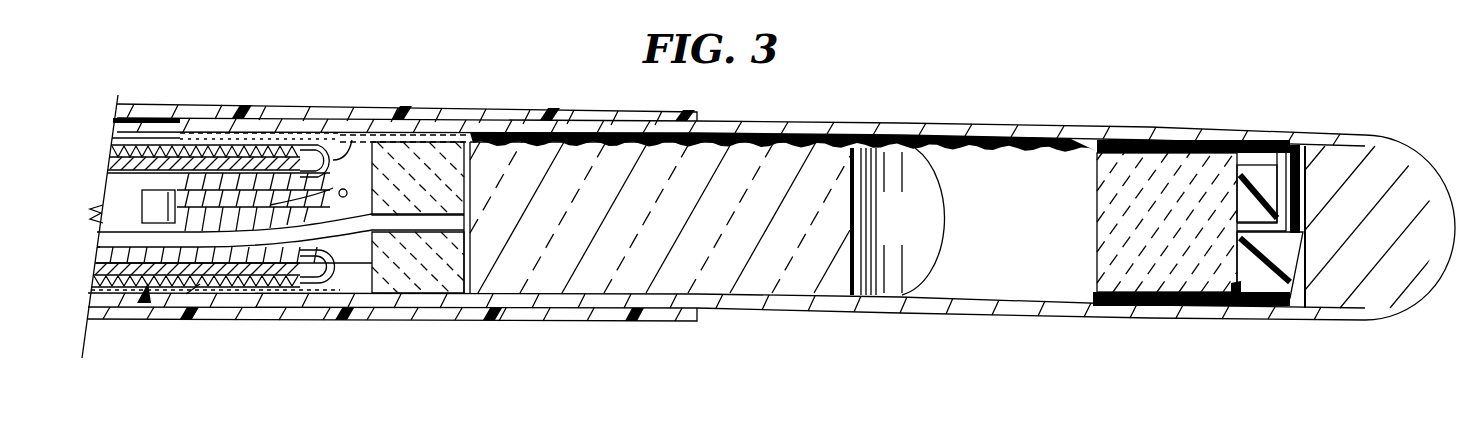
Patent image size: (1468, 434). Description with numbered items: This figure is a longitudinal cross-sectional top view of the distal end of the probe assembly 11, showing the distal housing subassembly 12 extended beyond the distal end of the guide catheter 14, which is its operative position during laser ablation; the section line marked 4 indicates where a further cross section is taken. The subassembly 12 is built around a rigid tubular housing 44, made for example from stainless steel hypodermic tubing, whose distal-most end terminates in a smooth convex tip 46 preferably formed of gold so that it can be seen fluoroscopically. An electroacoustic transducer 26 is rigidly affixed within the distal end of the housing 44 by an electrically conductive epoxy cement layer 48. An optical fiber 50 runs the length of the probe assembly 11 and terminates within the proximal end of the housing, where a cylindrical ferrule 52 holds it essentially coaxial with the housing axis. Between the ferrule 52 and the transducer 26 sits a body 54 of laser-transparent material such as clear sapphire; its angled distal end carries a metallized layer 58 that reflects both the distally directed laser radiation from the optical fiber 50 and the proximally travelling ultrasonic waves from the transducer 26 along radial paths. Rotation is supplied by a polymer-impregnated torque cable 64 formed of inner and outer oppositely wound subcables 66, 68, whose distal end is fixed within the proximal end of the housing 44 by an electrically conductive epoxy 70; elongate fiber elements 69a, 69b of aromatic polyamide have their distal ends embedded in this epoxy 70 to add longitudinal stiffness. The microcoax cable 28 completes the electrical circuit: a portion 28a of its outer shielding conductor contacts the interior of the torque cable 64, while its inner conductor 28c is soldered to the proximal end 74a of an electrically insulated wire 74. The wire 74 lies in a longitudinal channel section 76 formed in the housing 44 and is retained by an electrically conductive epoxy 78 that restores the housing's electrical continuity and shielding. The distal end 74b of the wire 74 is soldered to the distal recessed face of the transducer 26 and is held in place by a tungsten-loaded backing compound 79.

The section line 4- 4 is at (364, 77).
The probe assembly 11 is at (222, 376).
The distal housing subassembly 12 is at (838, 324).
The guide catheter 14 is at (549, 322).
The electroacoustic transducer 26 is at (1154, 223).
The microcoax cable 28 is at (113, 217).
The portion of outer shielding conductor 28a is at (157, 208).
The inner conductor 28c is at (348, 194).
The rigid tubular housing 44 is at (1157, 308).
The smooth convex tip 46 is at (1366, 238).
The electrically conductive epoxy cement layer 48 is at (1212, 147).
The optical fiber 50 is at (402, 262).
The cylindrical ferrule 52 is at (399, 177).
The body 54 is at (609, 222).
The metallized layer 58 is at (886, 223).
The torque cable 64 is at (147, 304).
The inner helically wound subcable 66 is at (97, 262).
The outer helically wound subcable 68 is at (92, 305).
The elongate fiber element 69a is at (348, 138).
The elongate fiber element 69b is at (362, 300).
The electrically conductive epoxy 70 is at (192, 296).
The electrically insulated wire 74 is at (984, 140).
The proximal end of wire 74a is at (400, 150).
The distal end of wire 74b is at (1287, 182).
The longitudinal channel section 76 is at (1080, 147).
The electrically conductive epoxy 78 is at (984, 151).
The backing compound 79 is at (1303, 266).